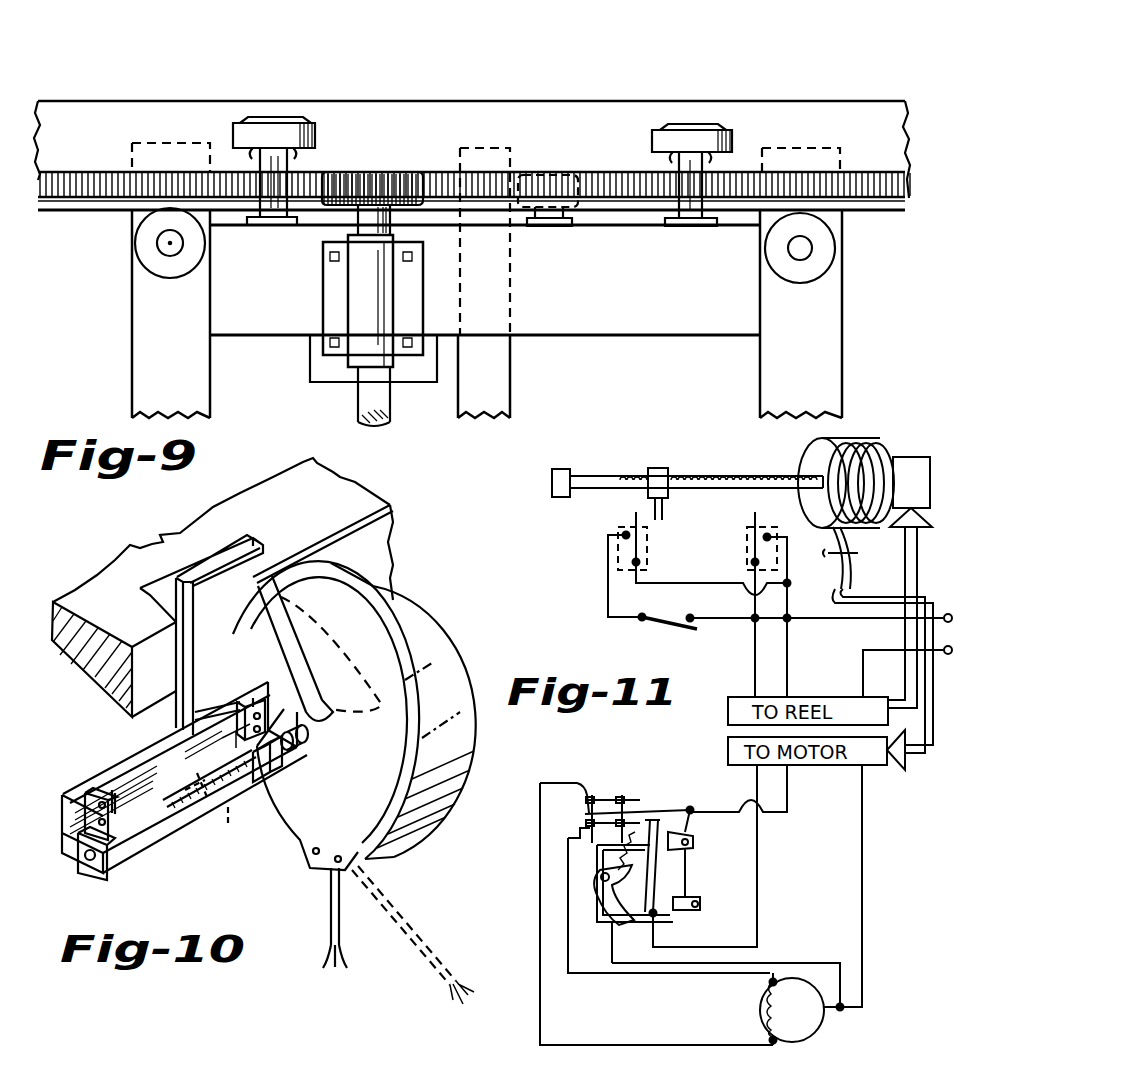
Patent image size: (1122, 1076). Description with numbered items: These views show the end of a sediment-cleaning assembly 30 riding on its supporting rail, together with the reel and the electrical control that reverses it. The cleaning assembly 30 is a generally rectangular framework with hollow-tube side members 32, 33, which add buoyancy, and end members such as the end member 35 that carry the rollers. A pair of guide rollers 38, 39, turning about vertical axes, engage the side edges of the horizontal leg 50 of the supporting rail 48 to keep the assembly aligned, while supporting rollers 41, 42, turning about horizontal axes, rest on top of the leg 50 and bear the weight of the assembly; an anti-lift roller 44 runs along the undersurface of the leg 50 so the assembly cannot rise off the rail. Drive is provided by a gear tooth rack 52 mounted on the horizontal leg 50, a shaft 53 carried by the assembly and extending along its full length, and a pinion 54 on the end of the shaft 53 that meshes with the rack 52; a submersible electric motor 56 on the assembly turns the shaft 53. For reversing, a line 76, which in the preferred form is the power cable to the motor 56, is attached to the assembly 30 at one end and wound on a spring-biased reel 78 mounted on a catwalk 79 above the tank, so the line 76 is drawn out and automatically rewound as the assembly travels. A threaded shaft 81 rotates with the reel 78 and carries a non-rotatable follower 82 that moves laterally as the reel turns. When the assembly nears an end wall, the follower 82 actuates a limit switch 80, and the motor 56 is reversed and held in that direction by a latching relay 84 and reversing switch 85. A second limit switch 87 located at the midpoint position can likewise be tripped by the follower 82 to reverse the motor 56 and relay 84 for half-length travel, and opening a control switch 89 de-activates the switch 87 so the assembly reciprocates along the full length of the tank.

In FIG. 9, the cleaning assembly 30 is at (131, 325).
In FIG. 11, the cleaning assembly 30 is at (897, 468).
In FIG. 9, the side member 32 is at (841, 366).
In FIG. 9, the side member 33 is at (140, 380).
In FIG. 9, the end member 35 is at (655, 306).
In FIG. 9, the guide roller 38 is at (810, 270).
In FIG. 9, the guide roller 39 is at (178, 262).
In FIG. 9, the supporting roller 41 is at (691, 138).
In FIG. 9, the supporting roller 42 is at (277, 133).
In FIG. 9, the anti-lift roller 44 is at (550, 174).
In FIG. 9, the supporting rail 48 is at (175, 100).
In FIG. 9, the horizontal leg 50 is at (96, 123).
In FIG. 9, the gear tooth rack 52 is at (115, 169).
In FIG. 9, the shaft 53 is at (358, 397).
In FIG. 9, the pinion 54 is at (390, 183).
In FIG. 11, the submersible electric motor 56 is at (760, 1011).
In FIG. 10, the line 76 is at (400, 928).
In FIG. 11, the line 76 is at (848, 580).
In FIG. 10, the reel 78 is at (386, 614).
In FIG. 11, the reel 78 is at (815, 463).
In FIG. 10, the catwalk 79 is at (132, 608).
In FIG. 10, the limit switch 80 is at (239, 692).
In FIG. 11, the limit switch 80 is at (747, 536).
In FIG. 11, the threaded shaft 81 is at (720, 478).
In FIG. 10, the follower 82 is at (282, 754).
In FIG. 11, the follower 82 is at (657, 468).
In FIG. 11, the latching relay 84 is at (689, 870).
In FIG. 11, the reversing switch 85 is at (580, 812).
In FIG. 10, the second limit switch 87 is at (95, 790).
In FIG. 11, the second limit switch 87 is at (647, 556).
In FIG. 11, the control switch 89 is at (664, 624).